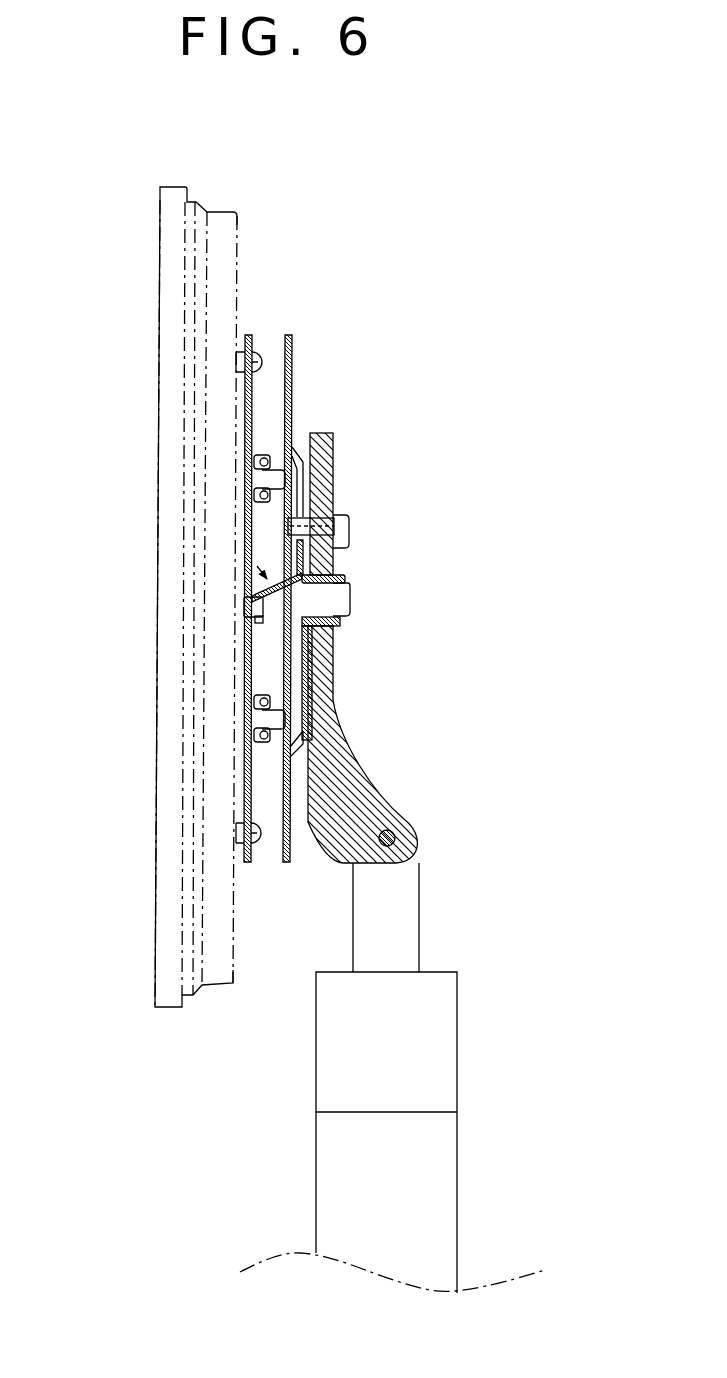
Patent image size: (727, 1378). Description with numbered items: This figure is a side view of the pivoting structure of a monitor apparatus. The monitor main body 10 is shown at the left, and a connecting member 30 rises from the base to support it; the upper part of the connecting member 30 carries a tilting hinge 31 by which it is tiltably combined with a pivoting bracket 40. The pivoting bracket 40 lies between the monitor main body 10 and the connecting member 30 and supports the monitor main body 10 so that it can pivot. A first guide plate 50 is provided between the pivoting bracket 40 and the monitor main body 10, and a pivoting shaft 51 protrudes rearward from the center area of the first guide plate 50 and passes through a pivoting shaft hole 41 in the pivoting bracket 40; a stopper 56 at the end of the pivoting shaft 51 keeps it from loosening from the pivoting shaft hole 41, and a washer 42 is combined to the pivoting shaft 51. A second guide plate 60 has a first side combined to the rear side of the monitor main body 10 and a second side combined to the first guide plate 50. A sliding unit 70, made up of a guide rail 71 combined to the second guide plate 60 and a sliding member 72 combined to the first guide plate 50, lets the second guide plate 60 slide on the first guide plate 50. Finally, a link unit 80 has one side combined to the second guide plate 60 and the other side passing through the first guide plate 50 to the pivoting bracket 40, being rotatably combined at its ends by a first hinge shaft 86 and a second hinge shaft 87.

The monitor main body 10 is at (153, 929).
The connecting member 30 is at (466, 1050).
The tilting hinge 31 is at (420, 843).
The pivoting bracket 40 is at (375, 648).
The pivoting shaft hole 41 is at (335, 667).
The washer 42 is at (340, 566).
The first guide plate 50 is at (294, 352).
The pivoting shaft 51 is at (348, 590).
The stopper 56 is at (340, 625).
The second guide plate 60 is at (255, 337).
The sliding unit 70 is at (80, 673).
The guide rail 71 is at (243, 680).
The sliding member 72 is at (235, 722).
The link unit 80 is at (243, 568).
The first hinge shaft 86 is at (355, 525).
The second hinge shaft 87 is at (243, 606).